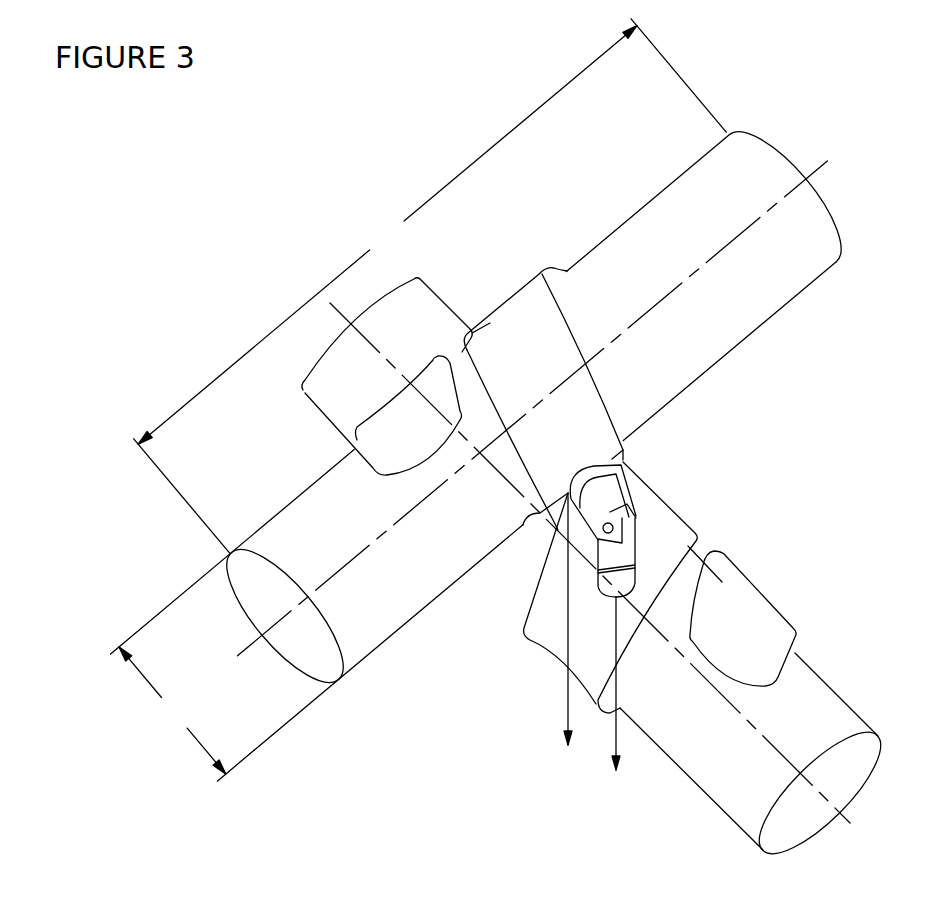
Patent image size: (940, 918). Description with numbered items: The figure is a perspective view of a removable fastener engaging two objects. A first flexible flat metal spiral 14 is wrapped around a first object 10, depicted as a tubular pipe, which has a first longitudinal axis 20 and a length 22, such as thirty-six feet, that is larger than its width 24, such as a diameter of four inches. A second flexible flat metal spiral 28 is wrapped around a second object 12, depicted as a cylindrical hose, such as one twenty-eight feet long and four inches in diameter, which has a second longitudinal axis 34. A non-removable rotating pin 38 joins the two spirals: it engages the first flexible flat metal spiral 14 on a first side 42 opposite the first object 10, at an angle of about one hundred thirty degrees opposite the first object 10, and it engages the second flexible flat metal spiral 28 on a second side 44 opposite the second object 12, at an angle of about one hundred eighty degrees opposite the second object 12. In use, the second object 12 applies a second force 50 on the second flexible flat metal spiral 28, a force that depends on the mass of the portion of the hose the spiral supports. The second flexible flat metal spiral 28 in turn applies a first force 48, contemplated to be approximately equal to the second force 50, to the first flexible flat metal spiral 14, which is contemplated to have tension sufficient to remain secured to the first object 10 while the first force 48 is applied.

The first object 10 is at (750, 165).
The second object 12 is at (838, 725).
The first flexible flat metal spiral 14 is at (533, 317).
The first longitudinal axis 20 is at (657, 305).
The length 22 is at (430, 286).
The width 24 is at (172, 710).
The second flexible flat metal spiral 28 is at (742, 635).
The second longitudinal axis 34 is at (693, 772).
The non-removable rotating pin 38 is at (637, 508).
The first side 42 is at (590, 468).
The second side 44 is at (683, 523).
The first force 48 is at (563, 708).
The second force 50 is at (613, 733).